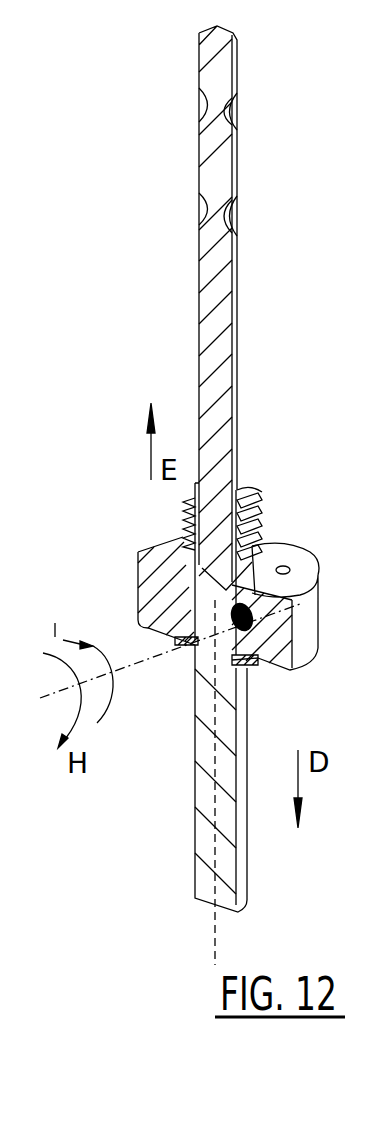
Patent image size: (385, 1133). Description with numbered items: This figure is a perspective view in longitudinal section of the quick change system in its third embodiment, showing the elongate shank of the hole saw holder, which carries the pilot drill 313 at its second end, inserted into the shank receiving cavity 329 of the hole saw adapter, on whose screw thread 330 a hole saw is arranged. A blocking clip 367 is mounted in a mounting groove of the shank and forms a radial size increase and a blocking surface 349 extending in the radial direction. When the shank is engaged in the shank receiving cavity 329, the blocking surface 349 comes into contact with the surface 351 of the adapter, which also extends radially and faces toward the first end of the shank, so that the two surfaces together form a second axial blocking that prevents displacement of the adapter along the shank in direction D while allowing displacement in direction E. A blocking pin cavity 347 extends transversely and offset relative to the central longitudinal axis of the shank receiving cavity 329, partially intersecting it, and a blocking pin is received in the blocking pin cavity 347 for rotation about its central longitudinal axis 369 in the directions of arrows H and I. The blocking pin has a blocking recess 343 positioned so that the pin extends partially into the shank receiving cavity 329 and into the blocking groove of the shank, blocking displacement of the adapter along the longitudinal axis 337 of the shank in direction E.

The pilot drill 313 is at (272, 242).
The shank receiving cavity 329 is at (254, 483).
The screw thread 330 is at (258, 530).
The blocking surface 349 is at (261, 469).
The blocking pin cavity 347 is at (255, 610).
The blocking clip 367 is at (253, 667).
The central longitudinal axis of blocking pin 369 is at (175, 645).
The surface 351 is at (140, 650).
The blocking recess 343 is at (290, 778).
The longitudinal axis of shank 337 is at (215, 935).